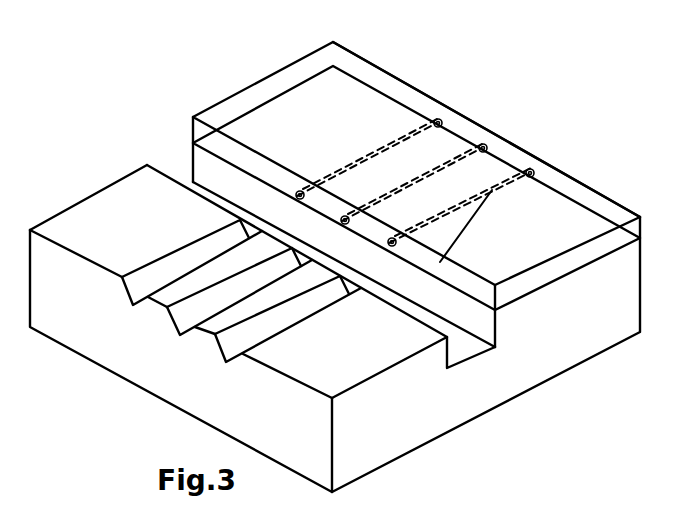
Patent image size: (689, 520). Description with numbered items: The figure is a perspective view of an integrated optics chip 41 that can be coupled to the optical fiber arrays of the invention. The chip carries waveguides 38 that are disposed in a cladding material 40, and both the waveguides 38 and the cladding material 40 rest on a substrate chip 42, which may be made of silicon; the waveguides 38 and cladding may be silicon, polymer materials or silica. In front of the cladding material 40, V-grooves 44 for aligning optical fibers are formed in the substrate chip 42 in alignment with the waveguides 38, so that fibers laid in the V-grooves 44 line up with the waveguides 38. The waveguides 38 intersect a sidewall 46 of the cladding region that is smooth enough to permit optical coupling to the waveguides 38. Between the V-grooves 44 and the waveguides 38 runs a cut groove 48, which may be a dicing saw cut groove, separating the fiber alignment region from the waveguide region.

The waveguides 38 is at (400, 133).
The cladding material 40 is at (295, 108).
The integrated optics chip 41 is at (590, 182).
The substrate chip 42 is at (534, 388).
The V-grooves 44 is at (218, 300).
The sidewall 46 is at (442, 268).
The cut groove 48 is at (188, 182).